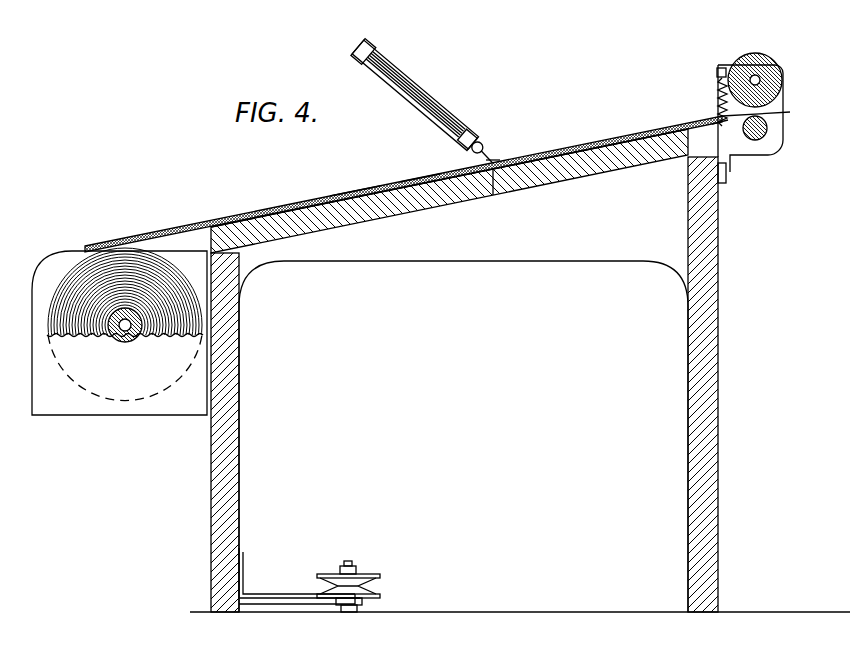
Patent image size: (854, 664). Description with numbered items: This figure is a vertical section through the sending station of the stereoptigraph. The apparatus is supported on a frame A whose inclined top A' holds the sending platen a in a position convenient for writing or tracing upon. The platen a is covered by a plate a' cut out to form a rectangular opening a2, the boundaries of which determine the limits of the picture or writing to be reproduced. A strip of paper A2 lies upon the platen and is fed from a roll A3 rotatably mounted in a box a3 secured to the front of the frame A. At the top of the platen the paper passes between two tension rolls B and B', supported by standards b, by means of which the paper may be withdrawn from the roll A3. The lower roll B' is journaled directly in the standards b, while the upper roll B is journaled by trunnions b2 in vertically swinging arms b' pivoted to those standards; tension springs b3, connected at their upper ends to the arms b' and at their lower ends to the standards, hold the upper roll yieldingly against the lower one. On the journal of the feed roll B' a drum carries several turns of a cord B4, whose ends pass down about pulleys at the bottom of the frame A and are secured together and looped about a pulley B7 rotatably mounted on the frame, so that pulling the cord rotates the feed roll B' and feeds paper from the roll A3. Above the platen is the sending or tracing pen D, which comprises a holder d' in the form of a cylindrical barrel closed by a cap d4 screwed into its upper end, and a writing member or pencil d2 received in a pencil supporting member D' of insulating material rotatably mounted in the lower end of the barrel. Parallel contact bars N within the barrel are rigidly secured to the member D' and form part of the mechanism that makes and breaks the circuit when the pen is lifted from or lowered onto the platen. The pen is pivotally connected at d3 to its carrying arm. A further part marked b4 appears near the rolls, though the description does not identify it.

The frame A is at (500, 338).
The inclined top A' is at (449, 179).
The strip of paper A2 is at (553, 146).
The roll A3 is at (100, 336).
The platen a is at (437, 182).
The plate a' is at (355, 174).
The rectangular opening a2 is at (418, 178).
The box a3 is at (140, 408).
The upper tension roll B is at (763, 65).
The lower tension roll B' is at (772, 148).
The cord B4 is at (372, 596).
The pulley B7 is at (344, 566).
The standards b is at (750, 135).
The vertically swinging arms b' is at (714, 53).
The trunnions b2 is at (755, 76).
The tension springs b3 is at (718, 94).
The guide b4 is at (712, 123).
The sending pen D is at (416, 103).
The pencil supporting member D' is at (514, 110).
The holder d' is at (398, 114).
The pencil d2 is at (479, 199).
The pivot d3 is at (498, 125).
The cap d4 is at (346, 49).
The contact bars N is at (476, 121).